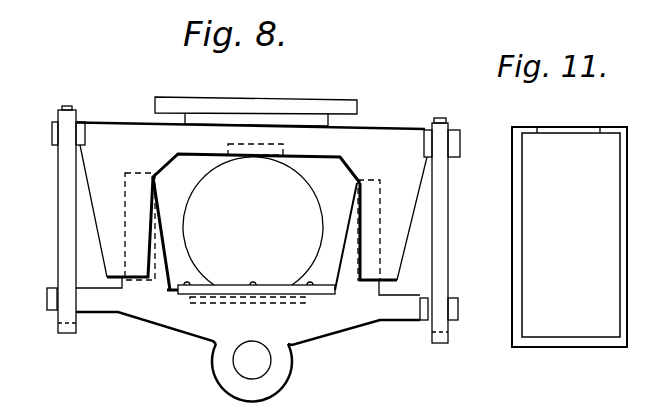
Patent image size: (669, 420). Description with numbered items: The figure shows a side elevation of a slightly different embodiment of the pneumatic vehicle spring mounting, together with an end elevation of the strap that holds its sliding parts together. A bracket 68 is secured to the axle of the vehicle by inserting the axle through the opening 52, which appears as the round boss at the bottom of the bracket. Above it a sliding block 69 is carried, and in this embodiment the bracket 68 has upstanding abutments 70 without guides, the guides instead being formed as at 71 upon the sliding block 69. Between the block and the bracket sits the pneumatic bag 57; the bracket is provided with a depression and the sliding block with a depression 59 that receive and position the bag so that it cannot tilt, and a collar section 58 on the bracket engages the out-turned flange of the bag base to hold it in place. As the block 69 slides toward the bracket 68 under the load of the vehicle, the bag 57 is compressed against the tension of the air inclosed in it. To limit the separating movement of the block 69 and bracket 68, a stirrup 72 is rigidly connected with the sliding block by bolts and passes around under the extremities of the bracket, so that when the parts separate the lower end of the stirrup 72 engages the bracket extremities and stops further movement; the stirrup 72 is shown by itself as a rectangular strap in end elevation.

In FIG. 8, the opening 52 is at (252, 371).
In FIG. 8, the pneumatic bag 57 is at (253, 221).
In FIG. 8, the collar section 58 is at (193, 290).
In FIG. 8, the socket 59 is at (262, 143).
In FIG. 8, the bracket 68 is at (347, 317).
In FIG. 8, the sliding block 69 is at (390, 127).
In FIG. 8, the upstanding abutment 70 is at (155, 263).
In FIG. 8, the guide 71 is at (138, 225).
In FIG. 11, the stirrup 72 is at (617, 230).